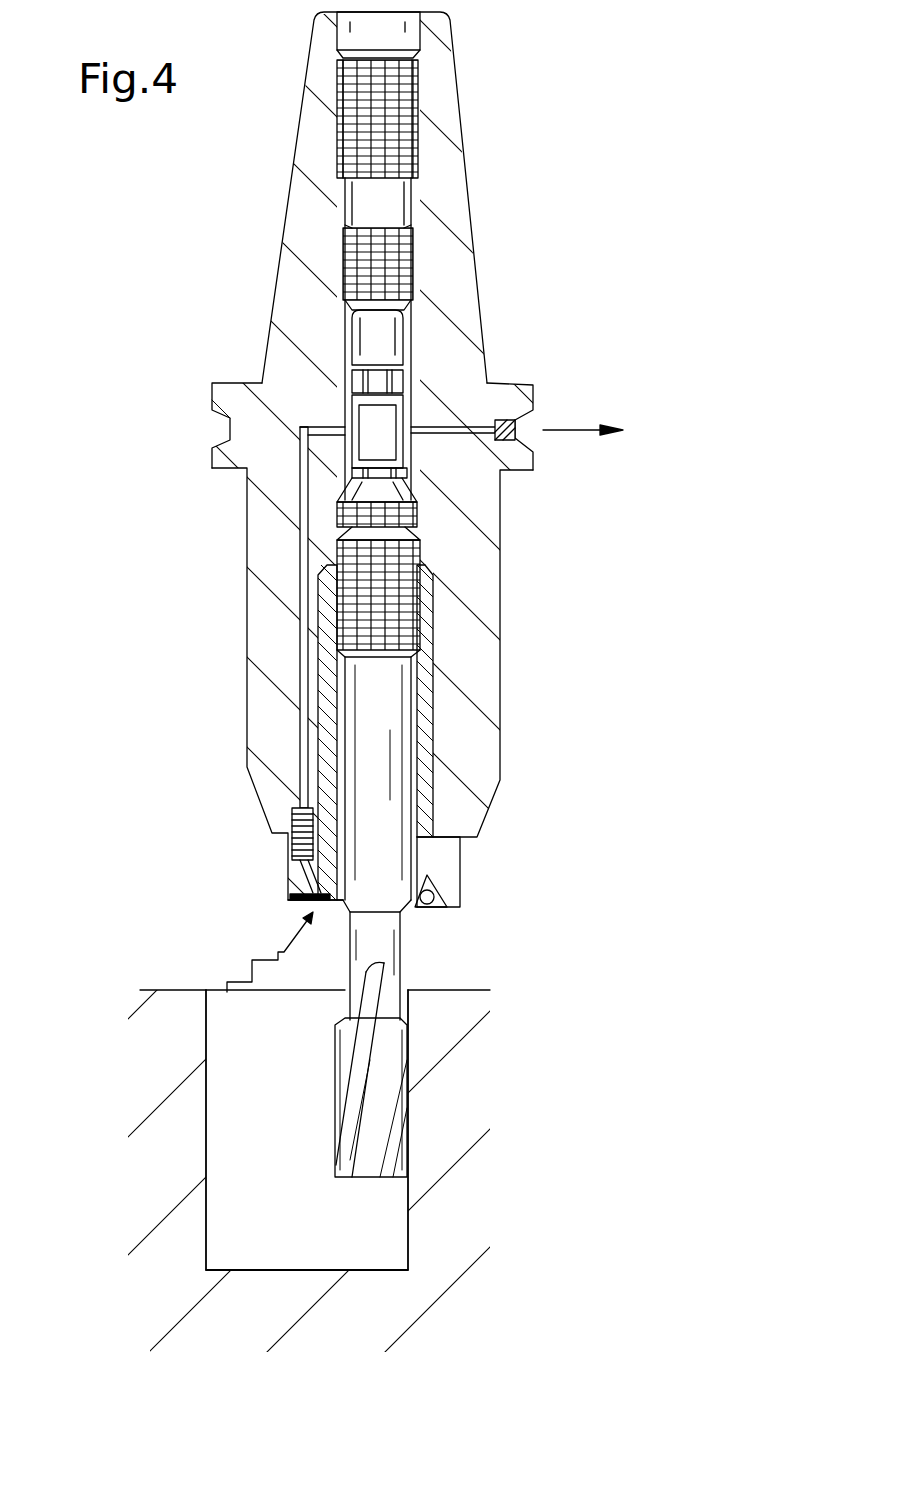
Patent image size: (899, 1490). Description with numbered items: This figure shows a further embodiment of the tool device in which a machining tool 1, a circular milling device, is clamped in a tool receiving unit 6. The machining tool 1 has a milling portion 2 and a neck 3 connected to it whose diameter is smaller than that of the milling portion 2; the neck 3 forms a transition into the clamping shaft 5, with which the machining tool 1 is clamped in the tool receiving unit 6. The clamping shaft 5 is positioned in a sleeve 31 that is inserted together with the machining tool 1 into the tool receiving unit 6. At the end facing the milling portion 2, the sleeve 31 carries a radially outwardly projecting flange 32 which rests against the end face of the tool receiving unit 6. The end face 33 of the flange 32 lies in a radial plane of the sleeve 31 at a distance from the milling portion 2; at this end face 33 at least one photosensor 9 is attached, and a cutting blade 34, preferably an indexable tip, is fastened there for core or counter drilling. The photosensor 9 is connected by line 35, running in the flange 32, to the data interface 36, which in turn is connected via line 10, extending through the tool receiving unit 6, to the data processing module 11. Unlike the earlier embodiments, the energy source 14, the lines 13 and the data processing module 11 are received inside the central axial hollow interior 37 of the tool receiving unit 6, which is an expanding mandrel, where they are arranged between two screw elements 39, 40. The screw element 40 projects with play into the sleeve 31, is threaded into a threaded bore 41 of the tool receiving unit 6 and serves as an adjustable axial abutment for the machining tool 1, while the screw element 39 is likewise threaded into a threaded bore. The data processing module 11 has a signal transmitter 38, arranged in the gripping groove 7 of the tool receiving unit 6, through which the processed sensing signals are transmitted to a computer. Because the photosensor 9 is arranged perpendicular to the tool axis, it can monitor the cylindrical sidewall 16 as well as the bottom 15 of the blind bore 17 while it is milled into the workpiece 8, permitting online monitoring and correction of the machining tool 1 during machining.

The machining tool 1 is at (352, 1095).
The milling portion 2 is at (378, 1110).
The neck 3 is at (390, 947).
The clamping shaft 5 is at (393, 748).
The tool receiving unit 6 is at (447, 290).
The gripping groove 7 is at (220, 432).
The workpiece 8 is at (445, 1110).
The photosensor 9 is at (292, 901).
The line 10 is at (300, 533).
The data processing module 11 is at (300, 428).
The lines 13 is at (358, 383).
The energy source 14 is at (368, 335).
The bottom 15 is at (243, 1268).
The cylindrical sidewall 16 is at (205, 1030).
The blind bore 17 is at (340, 1240).
The sleeve 31 is at (440, 674).
The flange 32 is at (437, 862).
The end face 33 is at (458, 907).
The cutting blade 34 is at (440, 891).
The line 35 is at (300, 878).
The data interface 36 is at (290, 820).
The central axial hollow interior 37 is at (403, 365).
The signal transmitter 38 is at (515, 425).
The screw element 39 is at (415, 268).
The screw element 40 is at (420, 552).
The threaded bore 41 is at (418, 205).